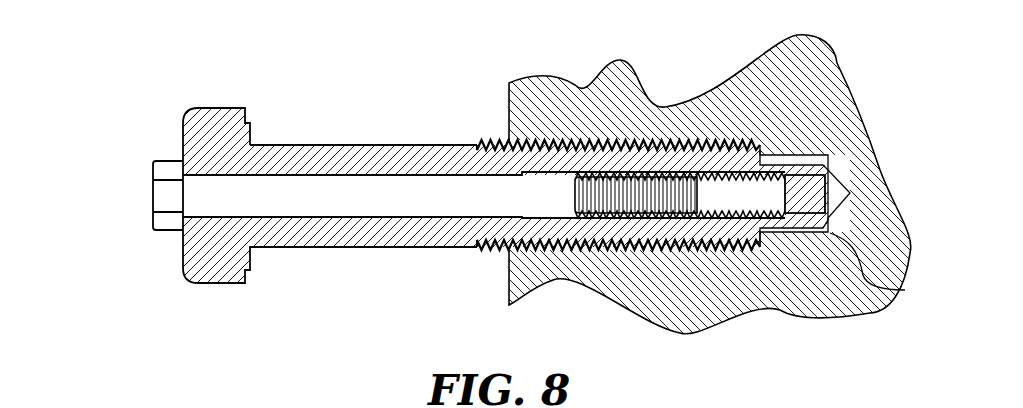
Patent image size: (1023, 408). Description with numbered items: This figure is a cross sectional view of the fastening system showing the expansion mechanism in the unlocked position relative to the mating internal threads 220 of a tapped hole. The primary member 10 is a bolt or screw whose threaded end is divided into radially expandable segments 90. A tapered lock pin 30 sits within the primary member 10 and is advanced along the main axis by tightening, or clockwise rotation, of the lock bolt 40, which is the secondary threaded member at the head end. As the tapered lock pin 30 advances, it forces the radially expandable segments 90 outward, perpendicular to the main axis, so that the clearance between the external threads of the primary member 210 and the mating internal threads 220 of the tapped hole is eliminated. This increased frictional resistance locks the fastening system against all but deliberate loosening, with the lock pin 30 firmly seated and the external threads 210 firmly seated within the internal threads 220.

The primary member 10 is at (283, 145).
The tapered lock pin 30 is at (827, 185).
The lock bolt 40 is at (153, 175).
The radially expandable segments 90 is at (910, 287).
The external threads of the primary member 210 is at (497, 243).
The internal threads 220 is at (603, 247).